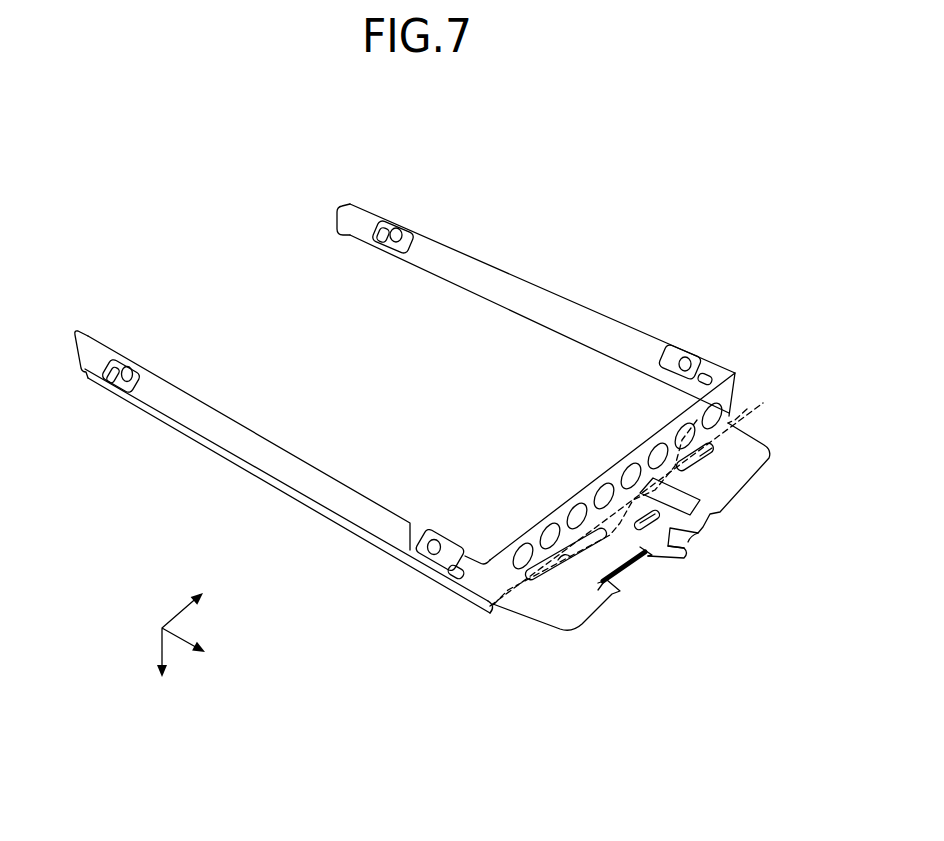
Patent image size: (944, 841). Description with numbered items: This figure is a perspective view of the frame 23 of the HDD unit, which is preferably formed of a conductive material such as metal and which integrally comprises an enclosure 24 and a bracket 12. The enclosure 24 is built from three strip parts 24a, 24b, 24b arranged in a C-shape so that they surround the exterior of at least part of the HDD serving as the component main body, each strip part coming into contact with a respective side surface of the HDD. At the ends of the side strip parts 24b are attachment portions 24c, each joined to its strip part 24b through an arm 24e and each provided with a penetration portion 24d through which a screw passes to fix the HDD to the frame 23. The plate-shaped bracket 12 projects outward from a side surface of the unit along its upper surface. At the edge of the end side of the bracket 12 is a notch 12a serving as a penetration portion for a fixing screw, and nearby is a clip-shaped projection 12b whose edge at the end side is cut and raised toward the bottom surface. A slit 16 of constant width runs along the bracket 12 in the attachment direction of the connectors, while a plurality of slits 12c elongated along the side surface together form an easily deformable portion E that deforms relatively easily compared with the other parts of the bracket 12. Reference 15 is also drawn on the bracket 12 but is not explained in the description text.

The frame 23 is at (573, 222).
The enclosure 24 is at (358, 204).
The strip part 24a is at (510, 585).
The strip part 24b is at (505, 270).
The attachment portion 24c is at (413, 238).
The penetration portion 24d is at (396, 228).
The arm 24e is at (385, 226).
The bracket 12 is at (778, 447).
The notch 12a is at (674, 545).
The clip-shaped projection 12b is at (641, 570).
The slit 12c is at (714, 448).
The tab 15 is at (717, 504).
The slit 16 is at (705, 518).
The easily deformable portion E is at (747, 409).